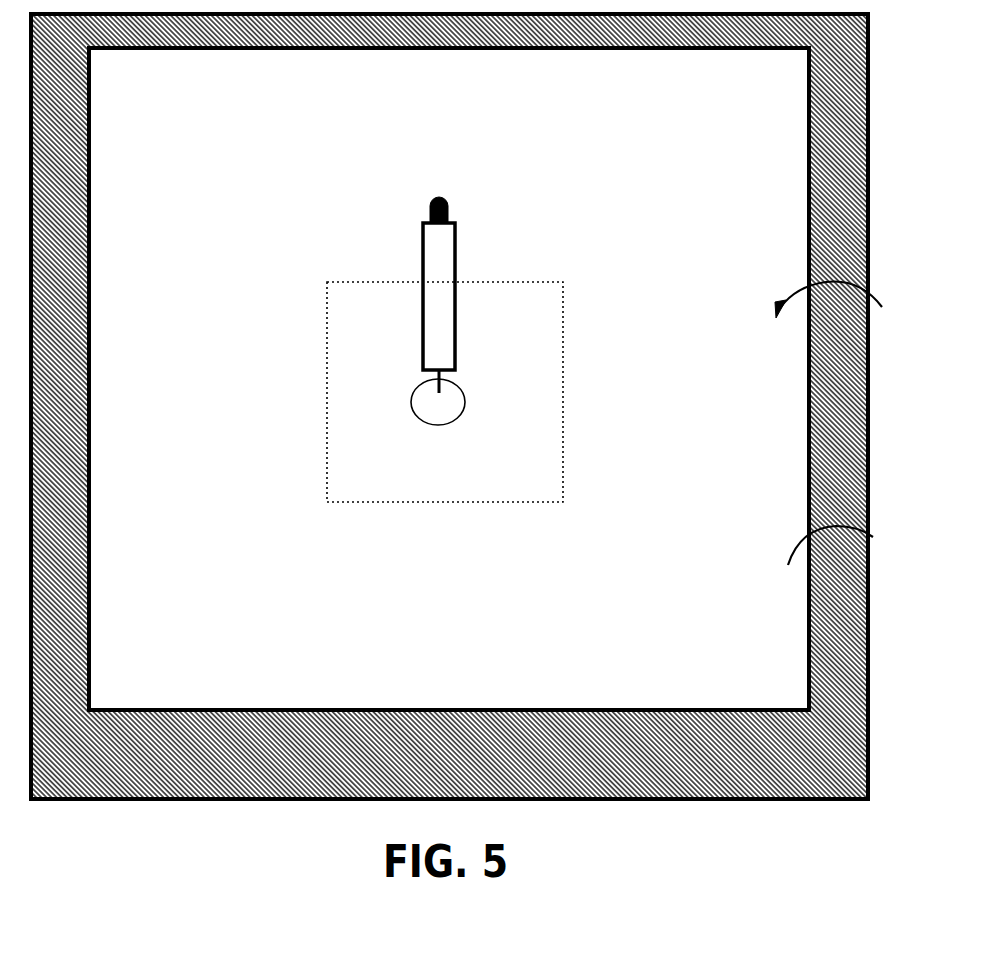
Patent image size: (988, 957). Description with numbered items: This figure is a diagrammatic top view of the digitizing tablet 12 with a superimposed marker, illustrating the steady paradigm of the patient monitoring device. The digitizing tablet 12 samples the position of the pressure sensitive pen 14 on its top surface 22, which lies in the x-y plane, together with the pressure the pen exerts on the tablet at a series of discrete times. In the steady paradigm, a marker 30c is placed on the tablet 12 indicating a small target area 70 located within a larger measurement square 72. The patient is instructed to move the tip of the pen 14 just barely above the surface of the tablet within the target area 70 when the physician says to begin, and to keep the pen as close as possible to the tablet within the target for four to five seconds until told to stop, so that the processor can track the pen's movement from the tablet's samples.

The digitizing tablet 12 is at (868, 663).
The pressure sensitive pen 14 is at (455, 257).
The top surface 22 is at (844, 311).
The marker 30c is at (854, 544).
The target area 70 is at (413, 411).
The measurement square 72 is at (562, 338).